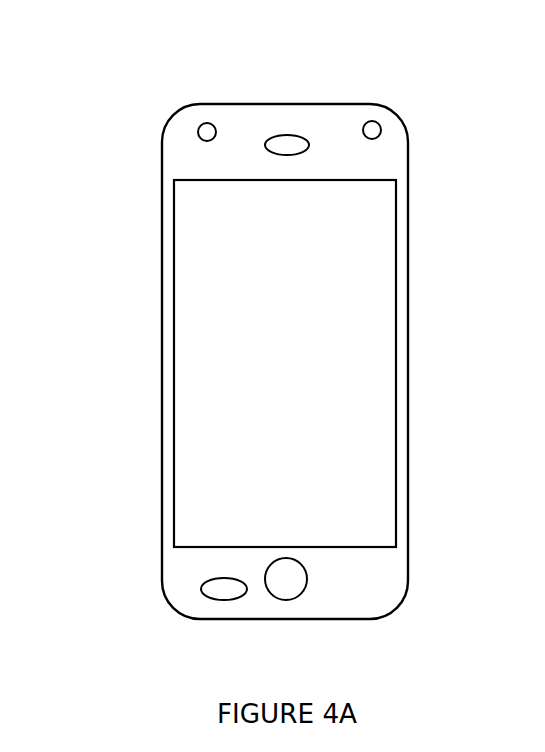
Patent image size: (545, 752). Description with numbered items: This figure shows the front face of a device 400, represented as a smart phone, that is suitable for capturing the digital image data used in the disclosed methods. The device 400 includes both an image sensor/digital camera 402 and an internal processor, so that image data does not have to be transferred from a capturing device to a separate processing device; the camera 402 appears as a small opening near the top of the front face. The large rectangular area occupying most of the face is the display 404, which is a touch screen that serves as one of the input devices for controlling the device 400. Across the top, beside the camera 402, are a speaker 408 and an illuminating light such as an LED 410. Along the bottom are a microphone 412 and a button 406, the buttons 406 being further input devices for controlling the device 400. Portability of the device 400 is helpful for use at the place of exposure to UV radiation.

The device 400 is at (380, 60).
The image sensor/digital camera 402 is at (383, 122).
The display 404 is at (362, 402).
The buttons 406 is at (309, 591).
The speaker 408 is at (282, 134).
The LED 410 is at (195, 128).
The microphone 412 is at (202, 588).